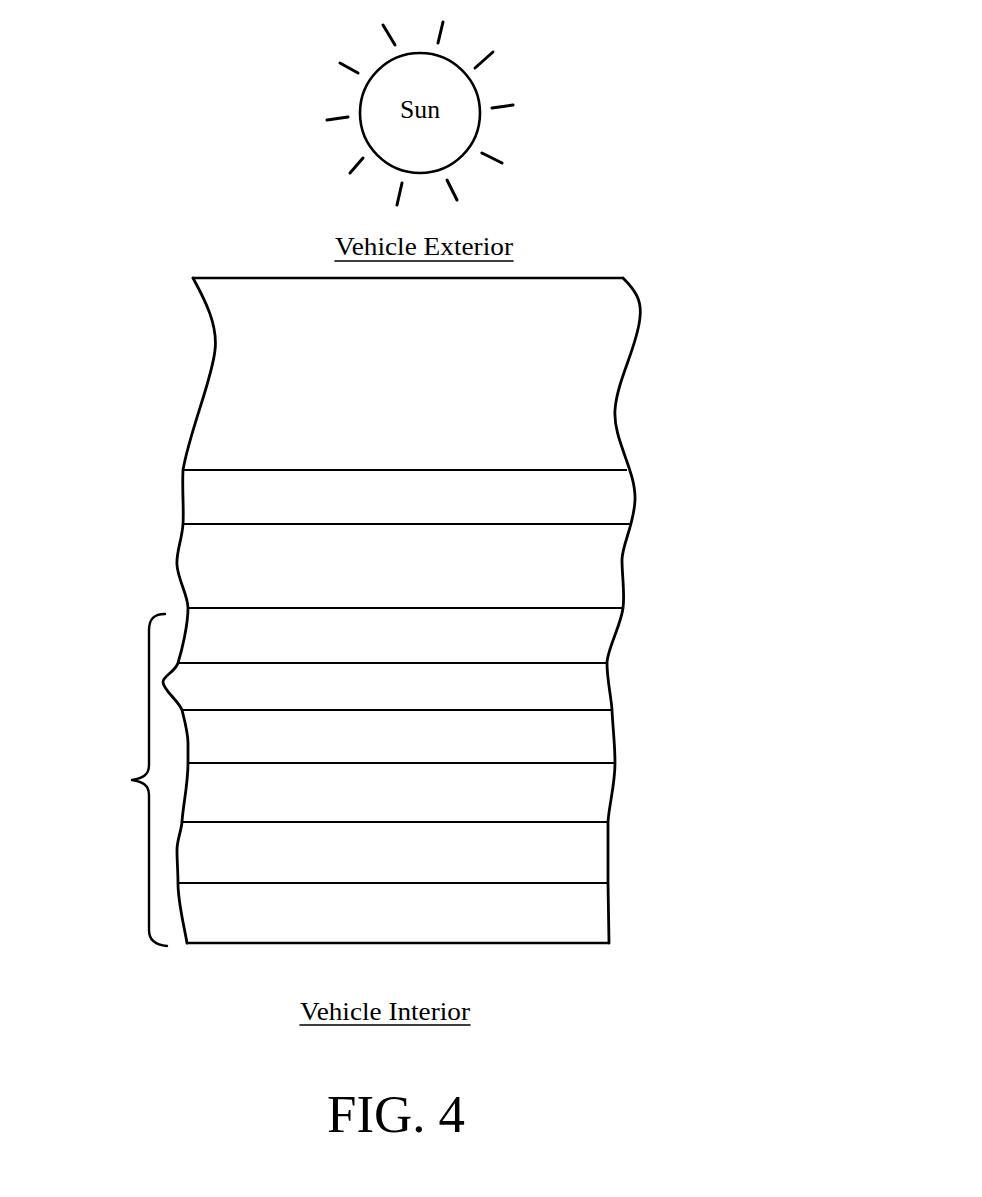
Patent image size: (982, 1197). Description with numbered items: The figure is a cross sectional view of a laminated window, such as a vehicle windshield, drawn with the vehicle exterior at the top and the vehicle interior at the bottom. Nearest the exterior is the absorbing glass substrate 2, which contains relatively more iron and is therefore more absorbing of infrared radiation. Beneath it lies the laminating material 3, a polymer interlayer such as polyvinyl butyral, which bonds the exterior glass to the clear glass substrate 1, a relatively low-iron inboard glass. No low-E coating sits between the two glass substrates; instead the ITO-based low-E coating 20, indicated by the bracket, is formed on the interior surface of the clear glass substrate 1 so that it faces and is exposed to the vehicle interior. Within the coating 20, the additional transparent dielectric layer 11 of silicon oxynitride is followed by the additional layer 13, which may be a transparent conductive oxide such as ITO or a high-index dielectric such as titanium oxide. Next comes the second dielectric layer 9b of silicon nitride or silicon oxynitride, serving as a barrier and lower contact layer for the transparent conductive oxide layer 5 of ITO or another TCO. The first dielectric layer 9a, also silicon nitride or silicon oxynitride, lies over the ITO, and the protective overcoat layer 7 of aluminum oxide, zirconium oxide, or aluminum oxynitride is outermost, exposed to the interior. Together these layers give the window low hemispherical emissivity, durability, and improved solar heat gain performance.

The interior glass substrate 1 is at (602, 573).
The exterior glass substrate 2 is at (598, 380).
The laminating material 3 is at (611, 494).
The transparent conductive oxide layer 5 is at (595, 794).
The protective overcoat layer 7 is at (590, 914).
The first dielectric layer 9a is at (590, 851).
The second dielectric layer 9b is at (596, 741).
The additional transparent dielectric layer 11 is at (599, 639).
The additional layer 13 is at (590, 688).
The low-E coating 20 is at (122, 780).